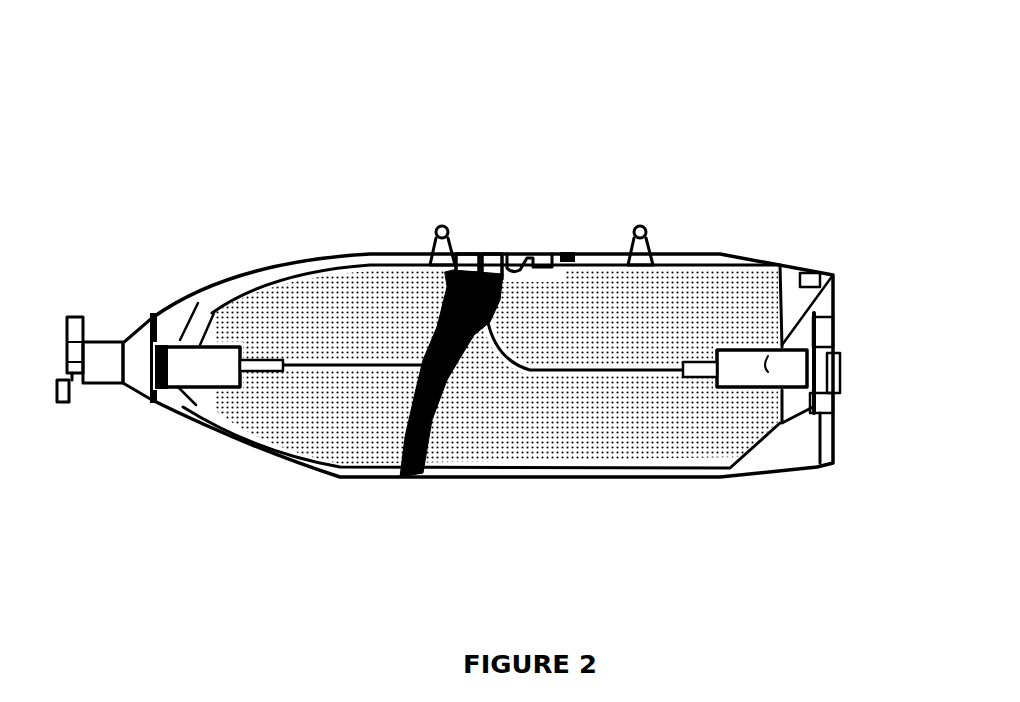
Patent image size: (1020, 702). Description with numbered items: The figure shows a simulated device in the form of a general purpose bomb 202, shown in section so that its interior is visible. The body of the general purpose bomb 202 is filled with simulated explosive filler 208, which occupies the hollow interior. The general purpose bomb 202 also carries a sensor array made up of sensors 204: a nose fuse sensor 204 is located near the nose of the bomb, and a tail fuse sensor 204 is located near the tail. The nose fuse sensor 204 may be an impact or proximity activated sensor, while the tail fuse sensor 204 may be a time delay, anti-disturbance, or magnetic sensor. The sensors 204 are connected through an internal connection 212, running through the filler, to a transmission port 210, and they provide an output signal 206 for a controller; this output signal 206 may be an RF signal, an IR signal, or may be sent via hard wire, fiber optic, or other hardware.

The general purpose bomb 202 is at (730, 103).
The sensor 204 is at (182, 342).
The output signal 206 is at (492, 240).
The simulated explosive filler 208 is at (342, 285).
The transmission port 210 is at (443, 392).
The internal connection 212 is at (460, 358).